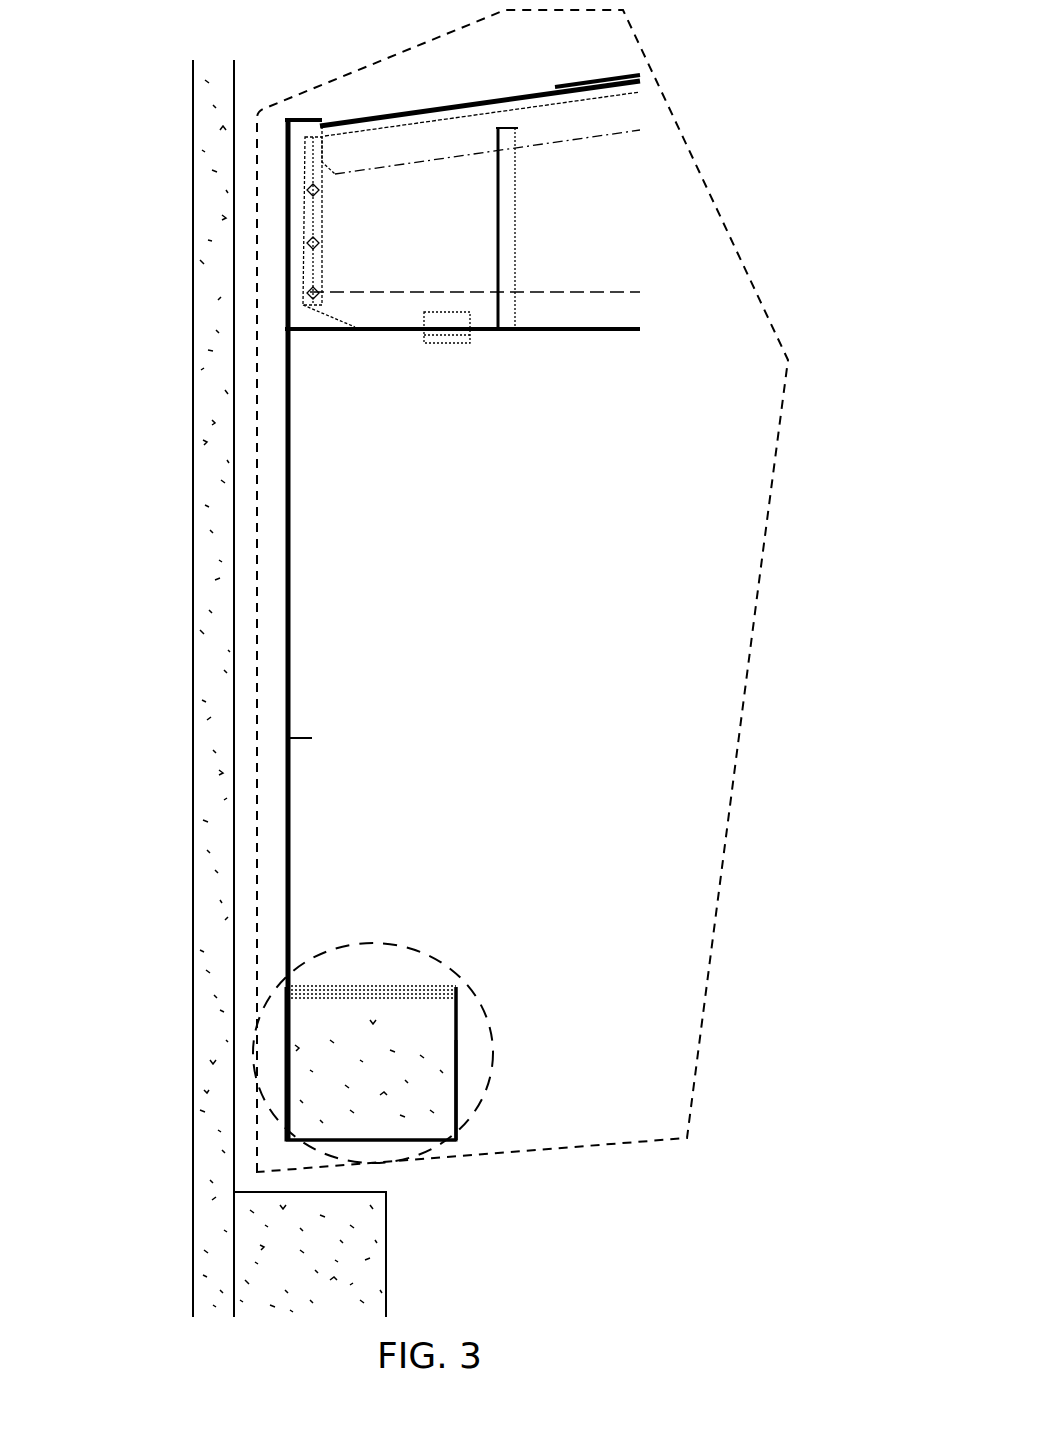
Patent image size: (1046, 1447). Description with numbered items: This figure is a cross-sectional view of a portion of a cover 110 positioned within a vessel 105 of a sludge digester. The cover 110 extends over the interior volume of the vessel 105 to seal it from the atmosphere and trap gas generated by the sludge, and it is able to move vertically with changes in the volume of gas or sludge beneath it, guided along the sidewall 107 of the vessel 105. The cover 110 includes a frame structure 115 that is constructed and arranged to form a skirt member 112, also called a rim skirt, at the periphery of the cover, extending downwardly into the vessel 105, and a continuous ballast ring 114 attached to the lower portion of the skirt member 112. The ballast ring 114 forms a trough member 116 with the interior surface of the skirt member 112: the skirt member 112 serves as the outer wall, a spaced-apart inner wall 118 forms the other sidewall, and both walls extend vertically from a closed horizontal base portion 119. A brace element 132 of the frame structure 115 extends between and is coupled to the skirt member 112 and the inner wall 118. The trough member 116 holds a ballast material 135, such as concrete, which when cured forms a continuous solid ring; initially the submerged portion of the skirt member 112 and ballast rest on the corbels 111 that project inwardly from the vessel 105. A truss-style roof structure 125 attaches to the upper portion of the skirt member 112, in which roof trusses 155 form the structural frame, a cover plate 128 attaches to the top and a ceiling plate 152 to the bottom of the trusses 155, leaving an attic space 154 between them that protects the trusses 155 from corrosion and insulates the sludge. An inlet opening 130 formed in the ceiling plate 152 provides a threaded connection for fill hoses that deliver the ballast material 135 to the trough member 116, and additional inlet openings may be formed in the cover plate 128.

The vessel 105 is at (212, 465).
The sidewall 107 is at (235, 869).
The cover 110 is at (757, 597).
The corbels 111 is at (358, 1250).
The skirt member 112 is at (289, 627).
The ballast ring 114 is at (422, 1032).
The frame structure 115 is at (523, 333).
The trough member 116 is at (497, 1062).
The inner wall 118 is at (458, 1087).
The base portion 119 is at (393, 1140).
The roof structure 125 is at (483, 97).
The cover plate 128 is at (568, 86).
The inlet opening 130 is at (455, 308).
The brace element 132 is at (317, 993).
The ballast material 135 is at (323, 1038).
The ceiling plate 152 is at (505, 330).
The attic space 154 is at (413, 262).
The roof trusses 155 is at (350, 128).